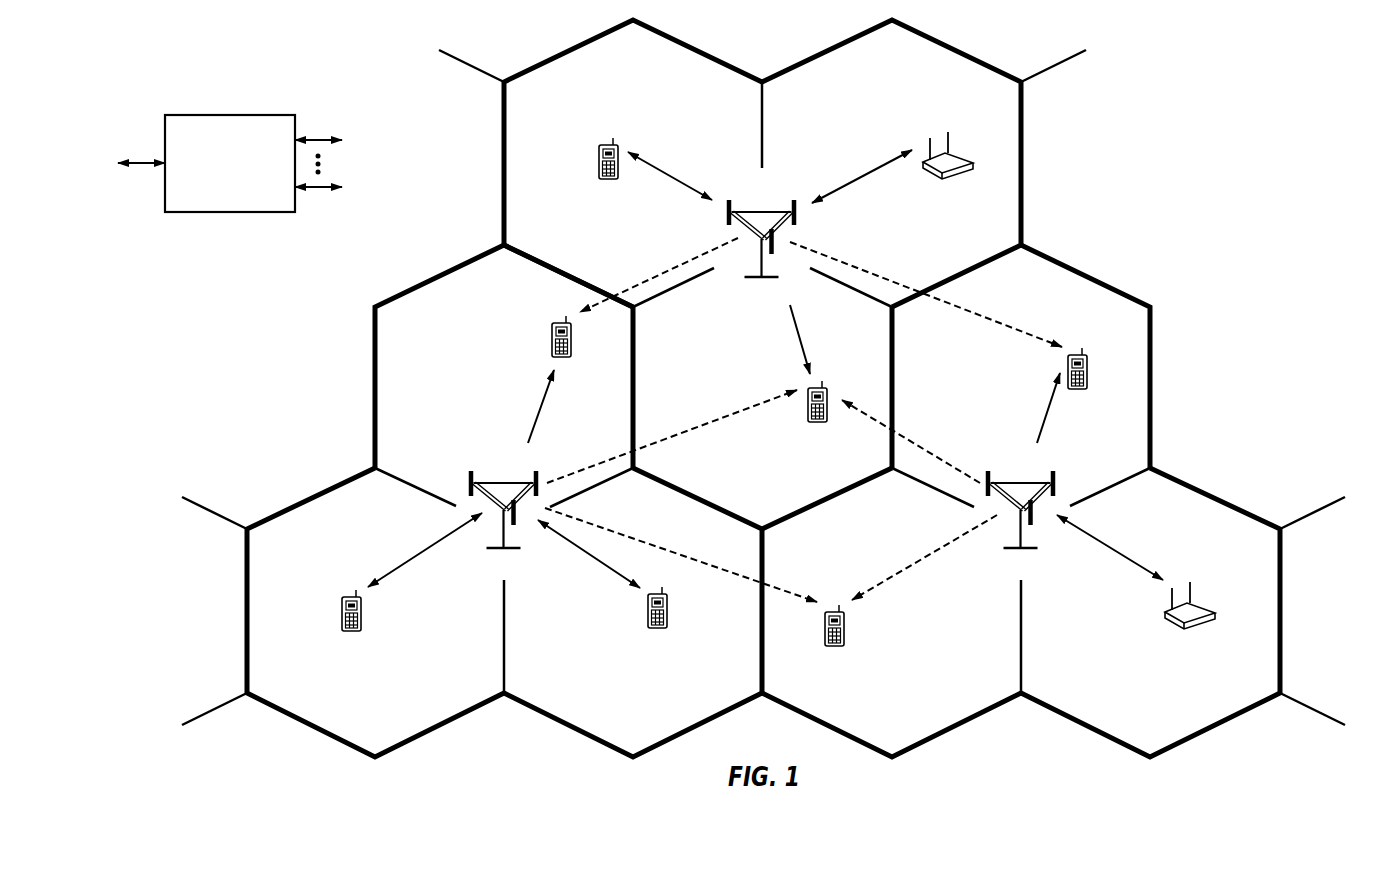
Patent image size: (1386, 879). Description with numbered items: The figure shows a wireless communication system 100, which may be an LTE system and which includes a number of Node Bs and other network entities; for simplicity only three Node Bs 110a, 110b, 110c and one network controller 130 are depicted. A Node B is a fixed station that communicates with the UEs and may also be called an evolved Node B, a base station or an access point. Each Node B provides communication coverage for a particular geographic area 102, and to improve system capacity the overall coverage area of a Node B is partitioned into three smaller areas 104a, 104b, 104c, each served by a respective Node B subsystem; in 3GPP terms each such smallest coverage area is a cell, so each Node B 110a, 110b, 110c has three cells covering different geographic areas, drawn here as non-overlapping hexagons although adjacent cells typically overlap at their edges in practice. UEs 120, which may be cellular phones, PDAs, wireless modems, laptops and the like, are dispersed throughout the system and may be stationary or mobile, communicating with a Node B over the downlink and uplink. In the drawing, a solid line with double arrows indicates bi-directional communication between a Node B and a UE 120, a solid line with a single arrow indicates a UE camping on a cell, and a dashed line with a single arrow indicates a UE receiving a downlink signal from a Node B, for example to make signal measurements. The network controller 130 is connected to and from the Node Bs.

The wireless communication system 100 is at (1215, 147).
The geographic area 102 is at (373, 387).
The smaller area 104a is at (521, 286).
The smaller area 104b is at (556, 237).
The smaller area 104c is at (783, 509).
The Node B 110a is at (754, 211).
The Node B 110b is at (496, 482).
The Node B 110c is at (1013, 482).
The UE 120 is at (599, 154).
The network controller 130 is at (228, 114).